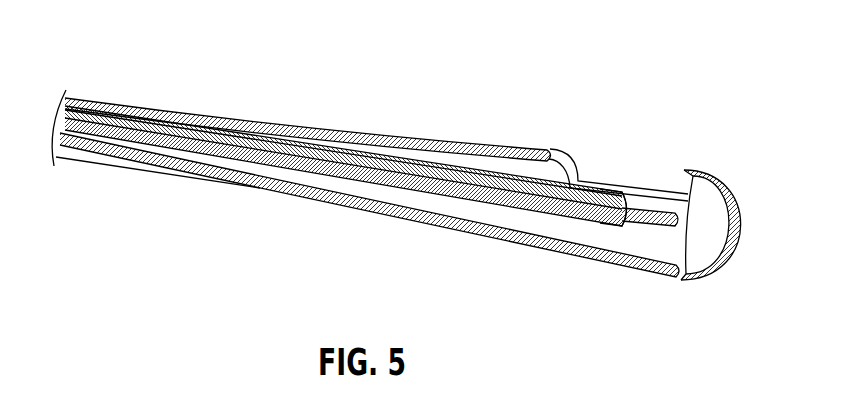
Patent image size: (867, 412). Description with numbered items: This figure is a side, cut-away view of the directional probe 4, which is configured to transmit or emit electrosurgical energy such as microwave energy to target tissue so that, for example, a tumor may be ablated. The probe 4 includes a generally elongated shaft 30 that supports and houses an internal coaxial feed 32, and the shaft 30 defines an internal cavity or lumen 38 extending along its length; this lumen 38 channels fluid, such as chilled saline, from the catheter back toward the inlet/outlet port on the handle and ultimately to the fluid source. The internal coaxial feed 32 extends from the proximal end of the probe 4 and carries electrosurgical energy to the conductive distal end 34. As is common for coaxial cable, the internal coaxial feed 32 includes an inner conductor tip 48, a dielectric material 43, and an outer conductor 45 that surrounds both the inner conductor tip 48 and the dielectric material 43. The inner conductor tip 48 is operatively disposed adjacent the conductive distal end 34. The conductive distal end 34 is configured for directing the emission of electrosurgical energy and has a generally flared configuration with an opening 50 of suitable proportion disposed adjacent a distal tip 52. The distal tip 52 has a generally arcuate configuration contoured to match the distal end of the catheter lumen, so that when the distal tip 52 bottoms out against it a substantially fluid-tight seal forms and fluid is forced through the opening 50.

The probe 4 is at (457, 95).
The shaft 30 is at (198, 117).
The internal coaxial feed 32 is at (597, 227).
The conductive distal end 34 is at (631, 273).
The lumen 38 is at (481, 215).
The dielectric material 43 is at (589, 196).
The outer conductor 45 is at (474, 176).
The inner conductor tip 48 is at (648, 203).
The opening 50 is at (584, 143).
The distal tip 52 is at (742, 228).